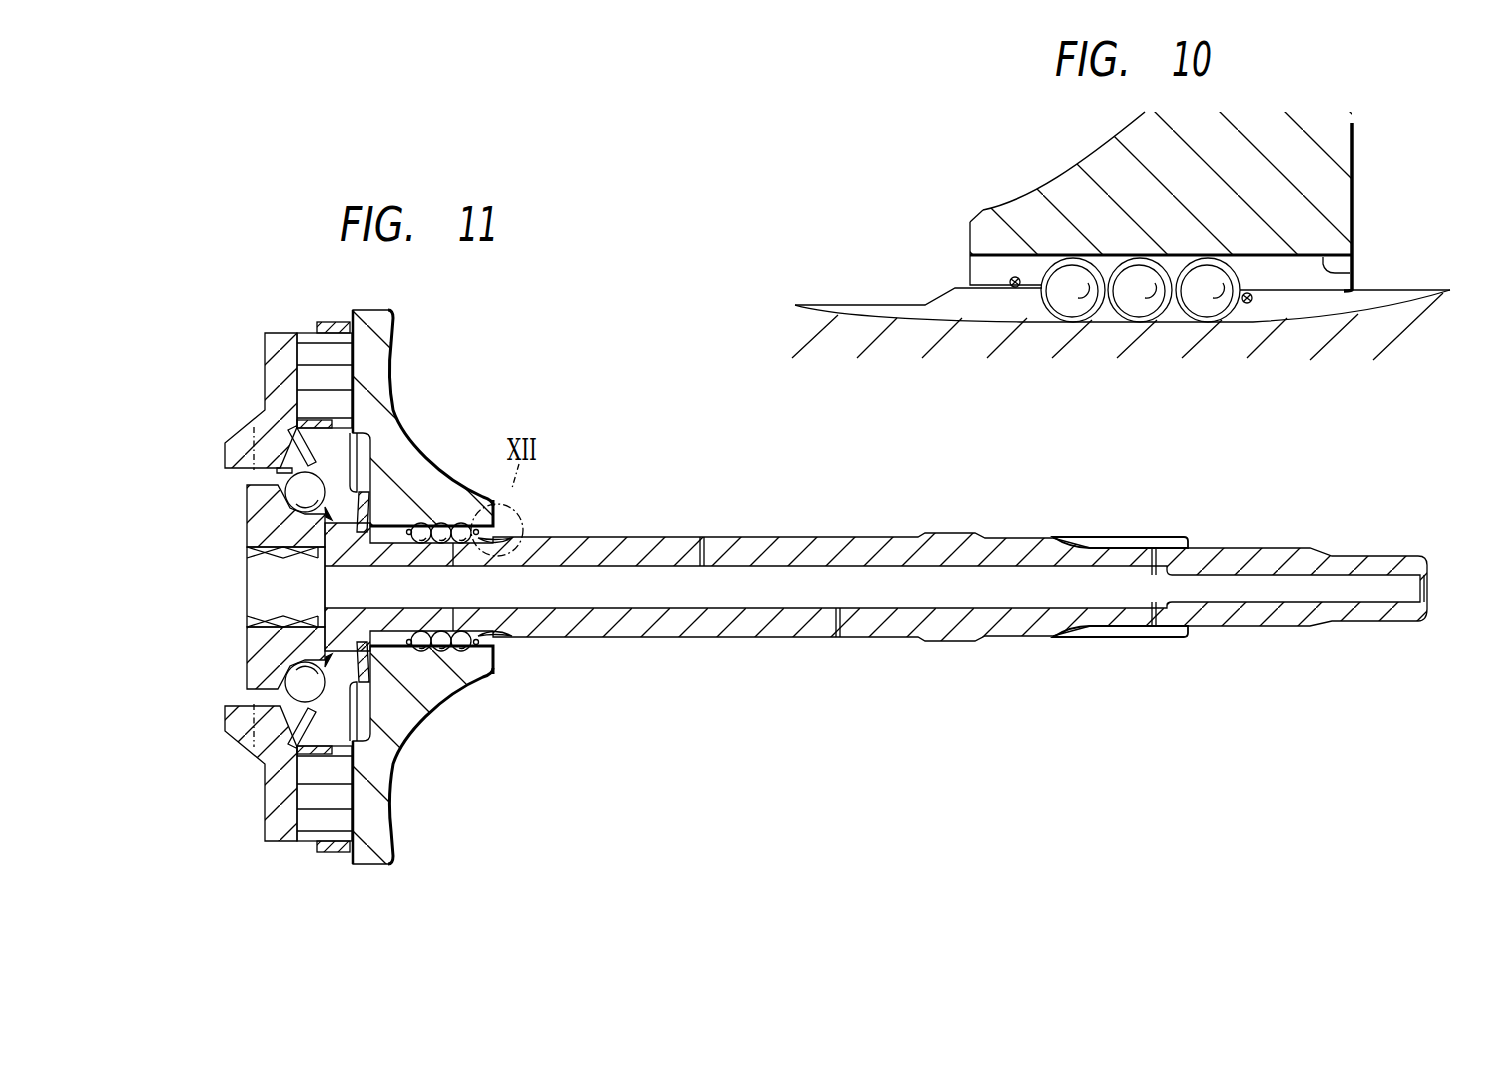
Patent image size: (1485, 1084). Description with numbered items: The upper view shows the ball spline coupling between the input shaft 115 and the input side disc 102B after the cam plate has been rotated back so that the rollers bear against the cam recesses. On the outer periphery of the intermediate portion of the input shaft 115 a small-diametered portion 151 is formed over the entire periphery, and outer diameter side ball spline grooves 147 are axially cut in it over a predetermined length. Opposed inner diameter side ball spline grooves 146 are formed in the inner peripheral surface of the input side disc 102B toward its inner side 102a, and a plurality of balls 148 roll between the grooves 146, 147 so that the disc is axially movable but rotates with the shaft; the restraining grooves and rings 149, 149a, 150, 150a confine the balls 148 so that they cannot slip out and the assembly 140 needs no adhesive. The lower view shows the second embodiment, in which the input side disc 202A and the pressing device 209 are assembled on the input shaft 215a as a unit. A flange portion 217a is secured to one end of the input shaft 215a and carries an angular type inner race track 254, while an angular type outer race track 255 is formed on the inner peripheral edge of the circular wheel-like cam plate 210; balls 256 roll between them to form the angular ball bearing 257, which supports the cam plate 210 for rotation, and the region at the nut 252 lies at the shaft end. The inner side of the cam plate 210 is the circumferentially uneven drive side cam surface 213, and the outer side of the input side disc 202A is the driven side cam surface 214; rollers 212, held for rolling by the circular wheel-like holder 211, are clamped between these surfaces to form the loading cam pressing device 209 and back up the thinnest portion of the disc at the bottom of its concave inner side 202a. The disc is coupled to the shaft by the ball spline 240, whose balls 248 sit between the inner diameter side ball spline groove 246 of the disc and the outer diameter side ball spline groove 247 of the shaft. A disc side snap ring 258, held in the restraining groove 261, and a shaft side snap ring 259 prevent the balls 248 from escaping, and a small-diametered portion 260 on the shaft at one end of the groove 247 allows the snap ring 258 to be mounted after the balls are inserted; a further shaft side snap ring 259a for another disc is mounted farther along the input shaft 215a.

In FIG. 10, the inner side 102a is at (1072, 166).
In FIG. 10, the input side disc 102B is at (1326, 172).
In FIG. 10, the input shaft 115 is at (890, 338).
In FIG. 10, the roller assembly 140 is at (1070, 312).
In FIG. 10, the inner diameter side ball spline grooves 146 is at (1356, 270).
In FIG. 10, the outer diameter side ball spline grooves 147 is at (1280, 313).
In FIG. 10, the balls 148 is at (1138, 305).
In FIG. 10, the screw 149 is at (1013, 275).
In FIG. 10, the screw 149a is at (1243, 305).
In FIG. 10, the hole 150 is at (1017, 290).
In FIG. 10, the hole 150a is at (1245, 290).
In FIG. 10, the small-diametered portion 151 is at (805, 303).
In FIG. 11, the inner side 202a is at (392, 372).
In FIG. 11, the input side disc 202A is at (375, 798).
In FIG. 11, the pressing device 209 is at (272, 368).
In FIG. 11, the cam plate 210 is at (272, 398).
In FIG. 11, the holder 211 is at (310, 840).
In FIG. 11, the rollers 212 is at (323, 373).
In FIG. 11, the drive side cam surface 213 is at (297, 350).
In FIG. 11, the driven side cam surface 214 is at (347, 817).
In FIG. 11, the input shaft 215a is at (835, 498).
In FIG. 11, the flange portion 217a is at (260, 648).
In FIG. 11, the bearing 240 is at (462, 682).
In FIG. 11, the inner diameter side ball spline groove 246 is at (410, 520).
In FIG. 11, the outer diameter side ball spline groove 247 is at (1117, 545).
In FIG. 11, the balls 248 is at (420, 552).
In FIG. 11, the nut 252 is at (265, 598).
In FIG. 11, the inner race track 254 is at (288, 495).
In FIG. 11, the outer race track 255 is at (263, 740).
In FIG. 11, the balls 256 is at (290, 672).
In FIG. 11, the ball bearing 257 is at (297, 513).
In FIG. 11, the disc side snap ring 258 is at (520, 537).
In FIG. 11, the shaft side snap ring 259 is at (420, 660).
In FIG. 11, the shaft side snap ring 259a is at (1098, 642).
In FIG. 11, the small-diametered portion 260 is at (565, 535).
In FIG. 11, the restraining groove 261 is at (497, 652).